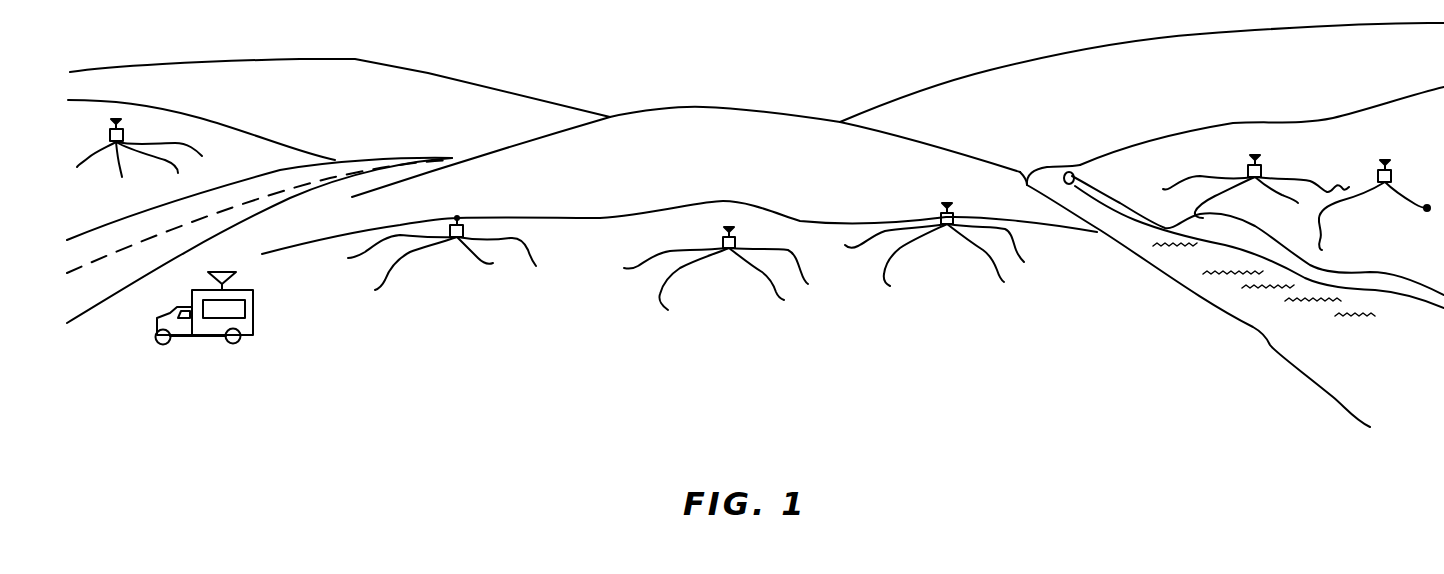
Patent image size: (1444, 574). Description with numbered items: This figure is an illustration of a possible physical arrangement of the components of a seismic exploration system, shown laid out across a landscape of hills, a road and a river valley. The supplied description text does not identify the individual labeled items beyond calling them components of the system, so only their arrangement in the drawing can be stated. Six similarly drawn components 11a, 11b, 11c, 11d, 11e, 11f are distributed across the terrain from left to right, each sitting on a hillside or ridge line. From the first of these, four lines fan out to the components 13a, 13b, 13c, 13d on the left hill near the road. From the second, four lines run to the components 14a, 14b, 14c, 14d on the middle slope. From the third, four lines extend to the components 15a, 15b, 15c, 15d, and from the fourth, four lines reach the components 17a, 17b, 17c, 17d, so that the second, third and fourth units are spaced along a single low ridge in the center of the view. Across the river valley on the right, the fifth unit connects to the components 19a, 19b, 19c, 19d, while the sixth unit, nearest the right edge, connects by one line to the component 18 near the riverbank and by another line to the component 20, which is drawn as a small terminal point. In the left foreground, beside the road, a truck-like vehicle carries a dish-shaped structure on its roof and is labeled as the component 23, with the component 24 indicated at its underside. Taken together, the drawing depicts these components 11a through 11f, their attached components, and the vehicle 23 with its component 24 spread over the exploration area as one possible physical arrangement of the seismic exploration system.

The data collection station 11a is at (126, 130).
The data collection station 11b is at (457, 218).
The data collection station 11c is at (753, 232).
The data collection station 11d is at (951, 210).
The data collection station 11e is at (1262, 164).
The data collection station 11f is at (1392, 170).
The sensor cable 13a is at (77, 167).
The sensor cable 13b is at (122, 177).
The sensor cable 13c is at (178, 173).
The sensor cable 13d is at (202, 156).
The sensor cable 14a is at (348, 258).
The sensor cable 14b is at (375, 290).
The sensor cable 14c is at (493, 263).
The sensor cable 14d is at (514, 257).
The sensor cable 15a is at (624, 268).
The sensor cable 15b is at (694, 286).
The sensor cable 15c is at (772, 281).
The sensor cable 15d is at (784, 272).
The sensor cable 17a is at (845, 245).
The sensor cable 17b is at (915, 260).
The sensor cable 17c is at (990, 259).
The sensor cable 17d is at (1002, 246).
The sensor cable 18 is at (1352, 223).
The sensor cable 19a is at (1163, 189).
The sensor cable 19b is at (1225, 197).
The sensor cable 19c is at (1298, 203).
The sensor cable 19d is at (1312, 180).
The sensor 20 is at (1427, 208).
The central recording vehicle 23 is at (253, 312).
The vehicle wheel 24 is at (200, 335).